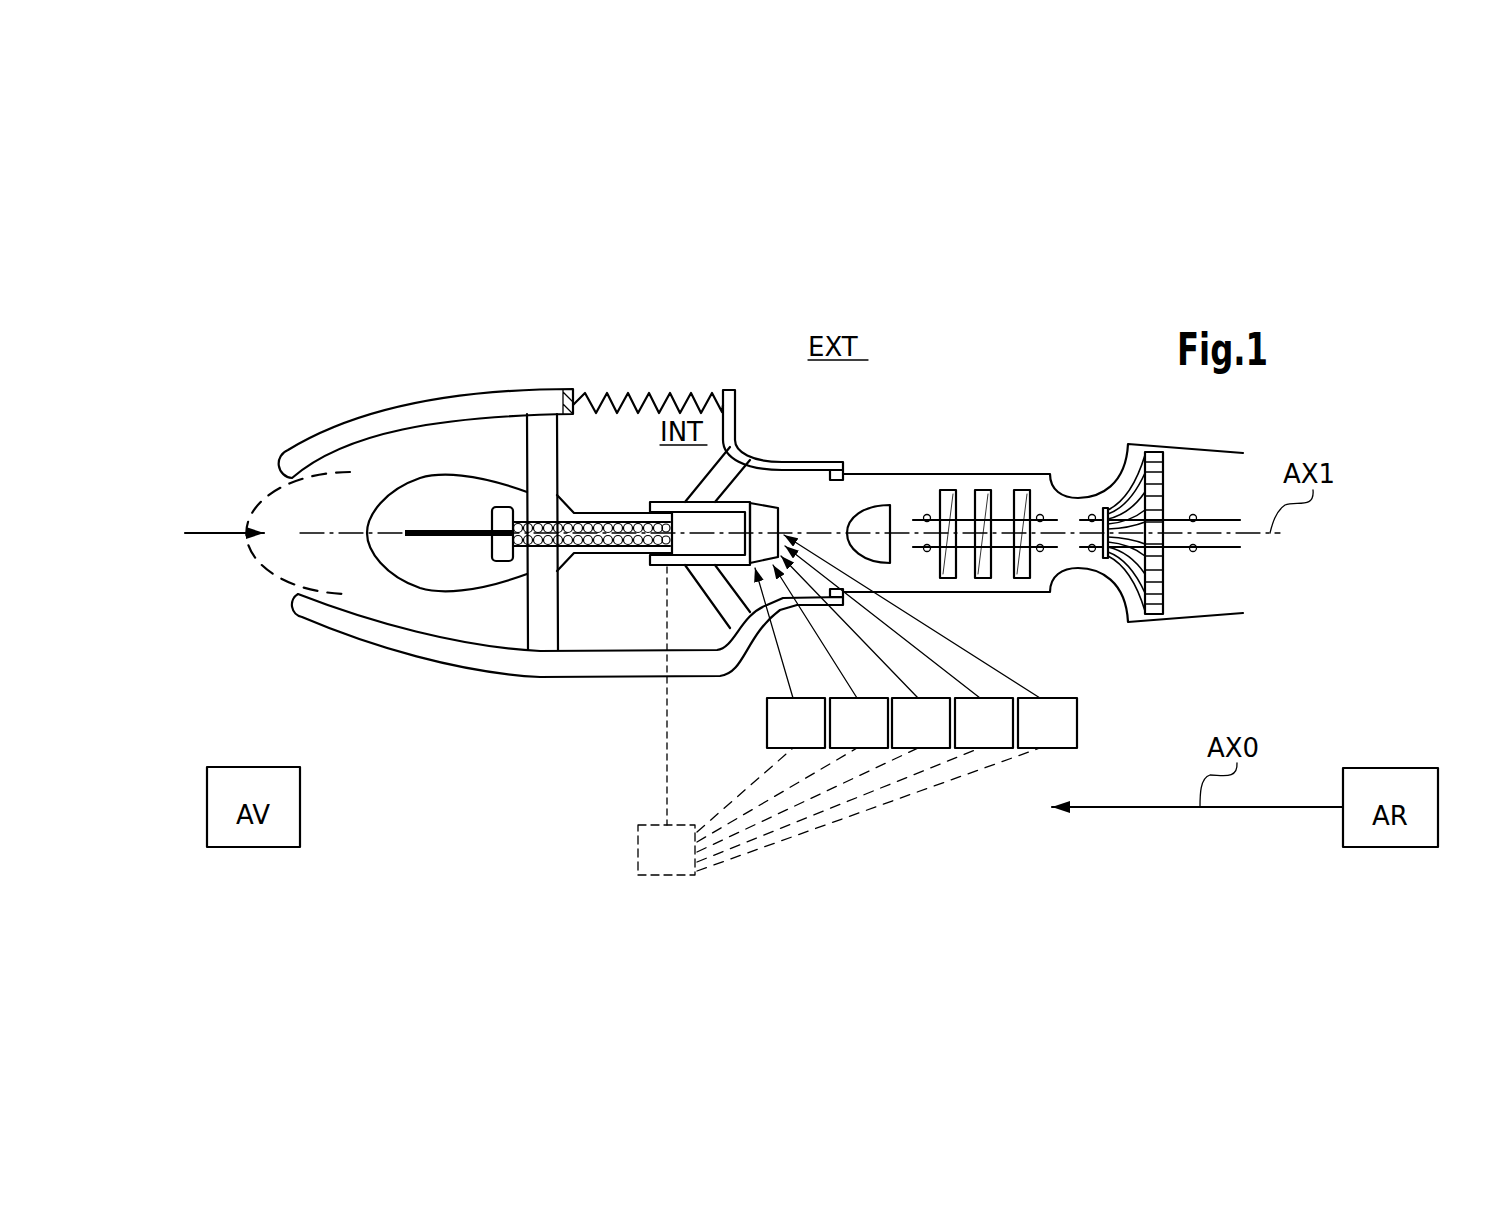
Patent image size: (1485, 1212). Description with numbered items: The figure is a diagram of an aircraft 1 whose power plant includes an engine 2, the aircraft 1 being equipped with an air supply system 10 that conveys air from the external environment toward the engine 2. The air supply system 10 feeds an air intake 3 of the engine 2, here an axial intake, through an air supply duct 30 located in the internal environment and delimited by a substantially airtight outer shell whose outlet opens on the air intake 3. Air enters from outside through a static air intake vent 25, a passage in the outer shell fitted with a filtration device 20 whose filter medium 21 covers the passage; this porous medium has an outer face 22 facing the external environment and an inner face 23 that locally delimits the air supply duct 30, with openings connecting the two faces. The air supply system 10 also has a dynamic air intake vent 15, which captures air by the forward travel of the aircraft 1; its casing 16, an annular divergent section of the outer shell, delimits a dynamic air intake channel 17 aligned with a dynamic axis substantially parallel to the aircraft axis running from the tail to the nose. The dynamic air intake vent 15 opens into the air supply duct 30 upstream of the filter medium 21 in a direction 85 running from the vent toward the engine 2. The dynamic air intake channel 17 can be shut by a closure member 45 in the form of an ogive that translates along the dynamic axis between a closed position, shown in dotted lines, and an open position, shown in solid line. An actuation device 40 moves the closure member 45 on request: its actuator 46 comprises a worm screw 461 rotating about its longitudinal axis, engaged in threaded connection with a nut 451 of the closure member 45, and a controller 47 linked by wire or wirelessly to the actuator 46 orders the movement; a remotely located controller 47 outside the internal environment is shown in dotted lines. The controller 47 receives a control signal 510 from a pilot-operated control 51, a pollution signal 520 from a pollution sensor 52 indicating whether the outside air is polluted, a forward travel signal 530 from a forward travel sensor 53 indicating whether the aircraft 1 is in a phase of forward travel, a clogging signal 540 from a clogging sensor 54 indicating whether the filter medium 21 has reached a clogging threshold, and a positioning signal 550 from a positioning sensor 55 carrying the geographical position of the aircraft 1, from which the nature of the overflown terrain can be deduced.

The aircraft 1 is at (965, 318).
The engine 2 is at (1100, 606).
The air intake 3 is at (828, 514).
The air supply system 10 is at (372, 366).
The dynamic air intake vent 15 is at (334, 416).
The casing 16 is at (448, 396).
The dynamic air intake channel 17 is at (328, 523).
The filtration device 20 is at (625, 347).
The filter medium 21 is at (602, 396).
The outer face 22 is at (690, 398).
The inner face 23 is at (588, 415).
The static air intake vent 25 is at (658, 378).
The air supply duct 30 is at (673, 488).
The actuation device 40 is at (650, 600).
The closure member 45 is at (262, 492).
The actuator 46 is at (723, 547).
The controller 47 is at (767, 522).
The control 51 is at (780, 737).
The pollution sensor 52 is at (843, 737).
The forward travel sensor 53 is at (905, 737).
The clogging sensor 54 is at (968, 737).
The positioning sensor 55 is at (1031, 737).
The direction 85 is at (205, 540).
The nut 451 is at (502, 507).
The worm screw 461 is at (425, 530).
The control signal 510 is at (787, 683).
The pollution signal 520 is at (776, 655).
The forward travel signal 530 is at (877, 650).
The clogging signal 540 is at (953, 677).
The positioning signal 550 is at (1015, 680).